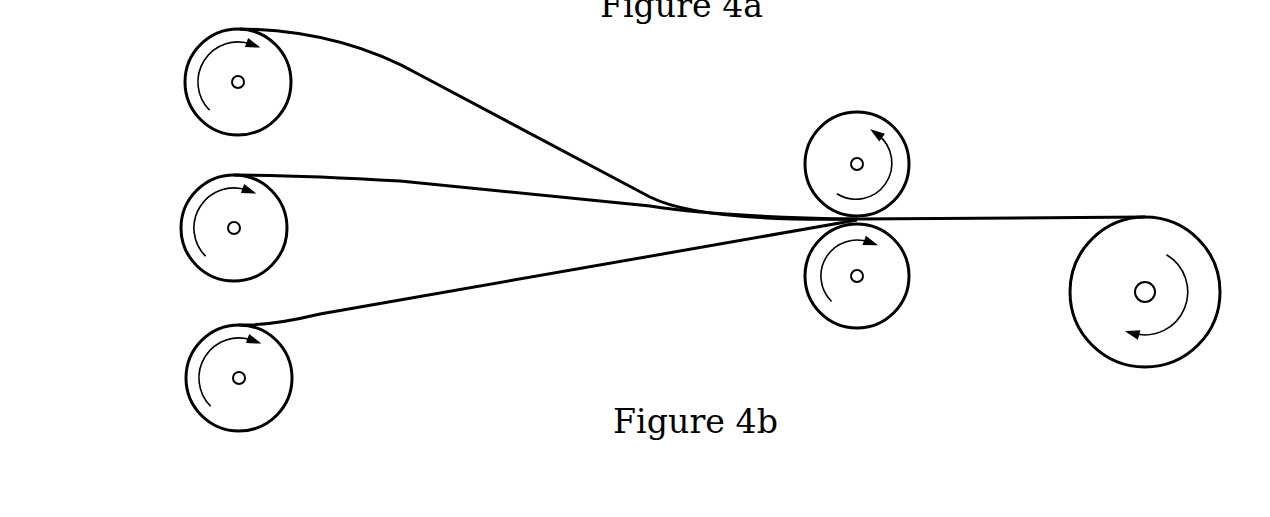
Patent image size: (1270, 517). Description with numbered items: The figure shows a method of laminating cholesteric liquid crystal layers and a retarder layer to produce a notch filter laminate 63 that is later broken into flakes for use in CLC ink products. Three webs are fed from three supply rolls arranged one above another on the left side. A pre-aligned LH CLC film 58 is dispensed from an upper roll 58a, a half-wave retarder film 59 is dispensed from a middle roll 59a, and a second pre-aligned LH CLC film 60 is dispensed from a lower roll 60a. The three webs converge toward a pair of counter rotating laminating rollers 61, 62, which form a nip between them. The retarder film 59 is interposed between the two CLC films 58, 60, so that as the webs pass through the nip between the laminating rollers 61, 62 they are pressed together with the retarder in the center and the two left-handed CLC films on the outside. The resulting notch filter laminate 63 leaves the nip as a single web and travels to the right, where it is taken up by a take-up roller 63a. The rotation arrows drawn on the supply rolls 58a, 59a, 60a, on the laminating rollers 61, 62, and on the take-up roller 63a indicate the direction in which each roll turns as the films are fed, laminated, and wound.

The pre-aligned LH CLC film 58 is at (438, 54).
The roll 58a is at (289, 72).
The half-wave retarder film 59 is at (400, 176).
The roll 59a is at (288, 232).
The pre-aligned LH CLC film 60 is at (401, 297).
The roll 60a is at (293, 380).
The laminating roller 61 is at (910, 158).
The laminating roller 62 is at (910, 268).
The notch filter laminate 63 is at (1067, 212).
The roller 63a is at (1208, 242).